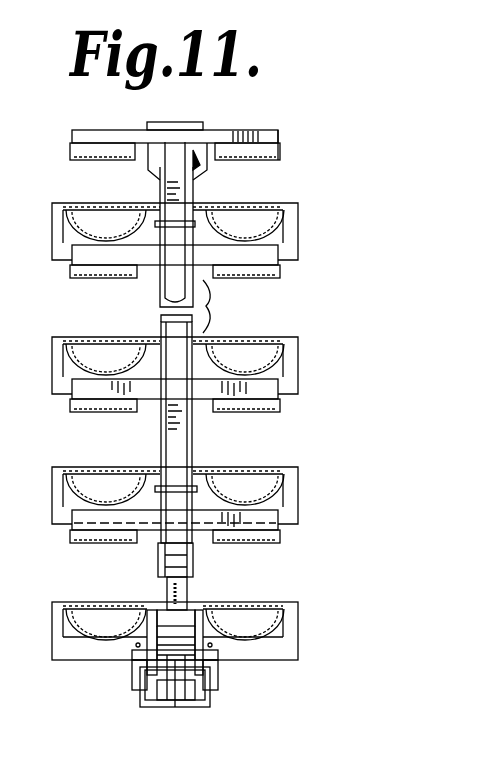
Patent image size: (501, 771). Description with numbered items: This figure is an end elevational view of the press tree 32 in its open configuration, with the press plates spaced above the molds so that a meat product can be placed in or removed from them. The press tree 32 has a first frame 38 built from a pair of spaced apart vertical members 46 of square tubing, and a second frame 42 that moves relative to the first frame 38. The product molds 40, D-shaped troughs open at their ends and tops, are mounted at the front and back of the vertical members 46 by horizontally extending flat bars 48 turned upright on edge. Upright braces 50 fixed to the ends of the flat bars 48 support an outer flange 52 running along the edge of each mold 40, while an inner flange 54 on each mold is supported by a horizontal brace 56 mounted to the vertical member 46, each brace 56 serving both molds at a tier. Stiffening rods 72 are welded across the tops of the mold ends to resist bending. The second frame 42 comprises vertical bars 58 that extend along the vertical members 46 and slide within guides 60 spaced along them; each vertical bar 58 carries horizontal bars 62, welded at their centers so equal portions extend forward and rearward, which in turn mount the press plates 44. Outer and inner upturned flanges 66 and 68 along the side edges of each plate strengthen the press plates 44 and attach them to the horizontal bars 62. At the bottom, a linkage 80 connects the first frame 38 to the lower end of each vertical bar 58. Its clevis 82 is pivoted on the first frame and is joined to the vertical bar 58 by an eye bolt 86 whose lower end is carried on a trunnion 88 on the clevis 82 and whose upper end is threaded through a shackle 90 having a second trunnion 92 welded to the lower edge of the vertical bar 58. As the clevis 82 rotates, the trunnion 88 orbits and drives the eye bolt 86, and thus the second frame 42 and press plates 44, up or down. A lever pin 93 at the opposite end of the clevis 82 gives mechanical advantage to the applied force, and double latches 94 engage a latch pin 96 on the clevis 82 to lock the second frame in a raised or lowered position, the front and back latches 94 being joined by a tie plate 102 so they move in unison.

The press tree 32 is at (80, 108).
The inner upturned flange 68 is at (148, 150).
The second frame 42 is at (175, 144).
The first frame 38 is at (197, 165).
The horizontal bars 62 is at (262, 138).
The outer upturned flange 66 is at (281, 151).
The press plates 44 is at (103, 161).
The product molds 40 is at (80, 205).
The outer flange 52 is at (58, 203).
The upright braces 50 is at (56, 233).
The flat bars 48 is at (58, 255).
The horizontal brace 56 is at (142, 213).
The inner flange 54 is at (200, 210).
The guides 60 is at (163, 266).
The vertical members 46 is at (162, 303).
The stiffening rods 72 is at (88, 337).
The vertical bars 58 is at (162, 440).
The second trunnion 92 is at (190, 548).
The shackle 90 is at (190, 570).
The eye bolt 86 is at (168, 590).
The trunnion 88 is at (190, 614).
The clevis 82 is at (143, 630).
The latch pin 96 is at (216, 651).
The double latches 94 is at (214, 680).
The linkages 80 is at (94, 696).
The tie plate 102 is at (163, 700).
The lever pin 93 is at (176, 702).